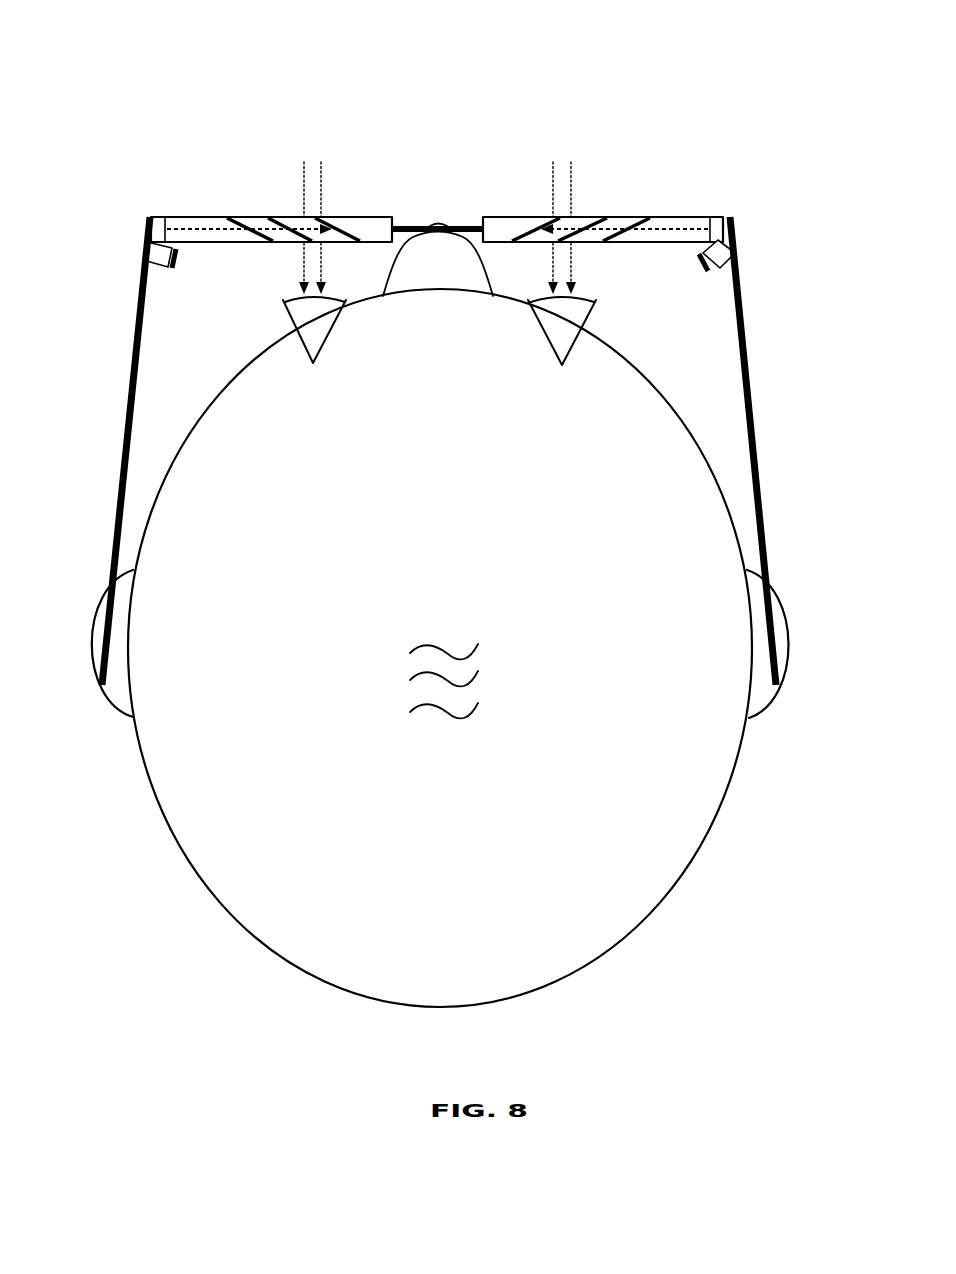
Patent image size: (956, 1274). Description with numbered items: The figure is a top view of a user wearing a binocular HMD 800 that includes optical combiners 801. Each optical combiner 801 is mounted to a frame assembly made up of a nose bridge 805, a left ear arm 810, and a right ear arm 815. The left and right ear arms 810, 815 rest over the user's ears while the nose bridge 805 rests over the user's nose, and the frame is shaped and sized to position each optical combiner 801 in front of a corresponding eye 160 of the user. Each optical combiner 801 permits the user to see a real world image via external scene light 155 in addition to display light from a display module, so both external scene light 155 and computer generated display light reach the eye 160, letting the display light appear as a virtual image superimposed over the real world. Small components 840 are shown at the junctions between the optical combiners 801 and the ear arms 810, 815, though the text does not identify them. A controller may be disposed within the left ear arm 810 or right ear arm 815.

The binocular HMD 800 is at (708, 56).
The optical combiner 801 is at (153, 160).
The external scene light 155 is at (304, 162).
The nose bridge 805 is at (467, 226).
The hinge / sensor 840 is at (158, 253).
The left ear arm 810 is at (122, 448).
The right ear arm 815 is at (758, 445).
The eye 160 is at (330, 350).